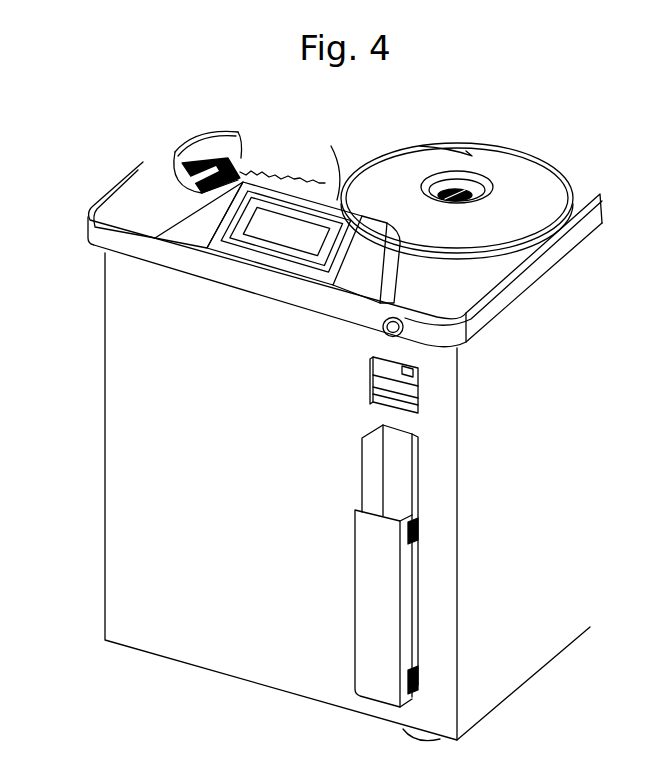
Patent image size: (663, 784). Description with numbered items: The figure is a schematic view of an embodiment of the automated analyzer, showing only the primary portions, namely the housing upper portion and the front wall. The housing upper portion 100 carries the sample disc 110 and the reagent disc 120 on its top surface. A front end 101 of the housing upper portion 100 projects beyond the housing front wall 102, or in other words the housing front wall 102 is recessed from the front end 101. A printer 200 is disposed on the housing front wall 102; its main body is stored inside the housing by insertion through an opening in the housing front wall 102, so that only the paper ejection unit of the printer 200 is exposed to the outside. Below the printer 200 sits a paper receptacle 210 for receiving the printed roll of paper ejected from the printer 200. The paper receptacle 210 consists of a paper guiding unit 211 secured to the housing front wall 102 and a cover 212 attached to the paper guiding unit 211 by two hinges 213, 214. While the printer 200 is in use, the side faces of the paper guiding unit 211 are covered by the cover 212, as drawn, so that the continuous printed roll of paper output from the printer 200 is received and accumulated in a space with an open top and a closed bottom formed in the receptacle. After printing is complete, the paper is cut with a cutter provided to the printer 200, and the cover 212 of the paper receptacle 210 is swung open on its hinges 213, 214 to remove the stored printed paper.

The housing upper portion 100 is at (480, 272).
The front end of the housing upper portion 101 is at (200, 272).
The housing front wall 102 is at (112, 495).
The sample disc 110 is at (233, 163).
The reagent disc 120 is at (540, 168).
The printer 200 is at (425, 390).
The paper receptacle 210 is at (373, 566).
The paper guiding unit 211 is at (420, 483).
The cover 212 is at (352, 572).
The hinge 213 is at (423, 528).
The hinge 214 is at (423, 674).